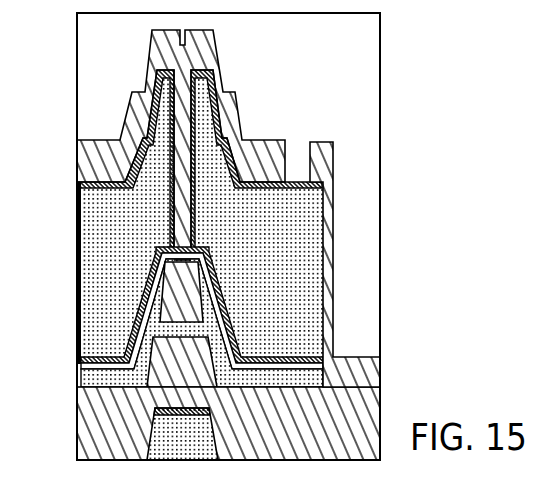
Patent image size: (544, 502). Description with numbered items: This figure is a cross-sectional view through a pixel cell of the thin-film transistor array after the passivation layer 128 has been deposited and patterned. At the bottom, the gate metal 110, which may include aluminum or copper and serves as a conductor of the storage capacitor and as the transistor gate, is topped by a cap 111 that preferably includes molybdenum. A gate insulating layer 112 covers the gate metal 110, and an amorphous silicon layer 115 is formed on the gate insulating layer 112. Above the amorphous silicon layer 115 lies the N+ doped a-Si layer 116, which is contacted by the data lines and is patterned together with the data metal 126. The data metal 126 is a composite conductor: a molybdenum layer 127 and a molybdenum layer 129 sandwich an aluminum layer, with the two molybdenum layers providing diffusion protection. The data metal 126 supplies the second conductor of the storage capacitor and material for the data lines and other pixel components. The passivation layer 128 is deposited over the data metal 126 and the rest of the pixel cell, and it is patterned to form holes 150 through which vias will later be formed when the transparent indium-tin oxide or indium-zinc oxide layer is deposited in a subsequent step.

The gate metal 110 is at (214, 425).
The cap 111 is at (212, 412).
The gate insulating layer 112 is at (98, 453).
The amorphous silicon layer 115 is at (325, 381).
The N+ doped a-Si layer 116 is at (325, 373).
The data metal 126 is at (312, 267).
The layer of data metal 127 is at (80, 364).
The passivation layer 128 is at (236, 97).
The layer of data metal 129 is at (158, 77).
The holes 150 is at (297, 152).